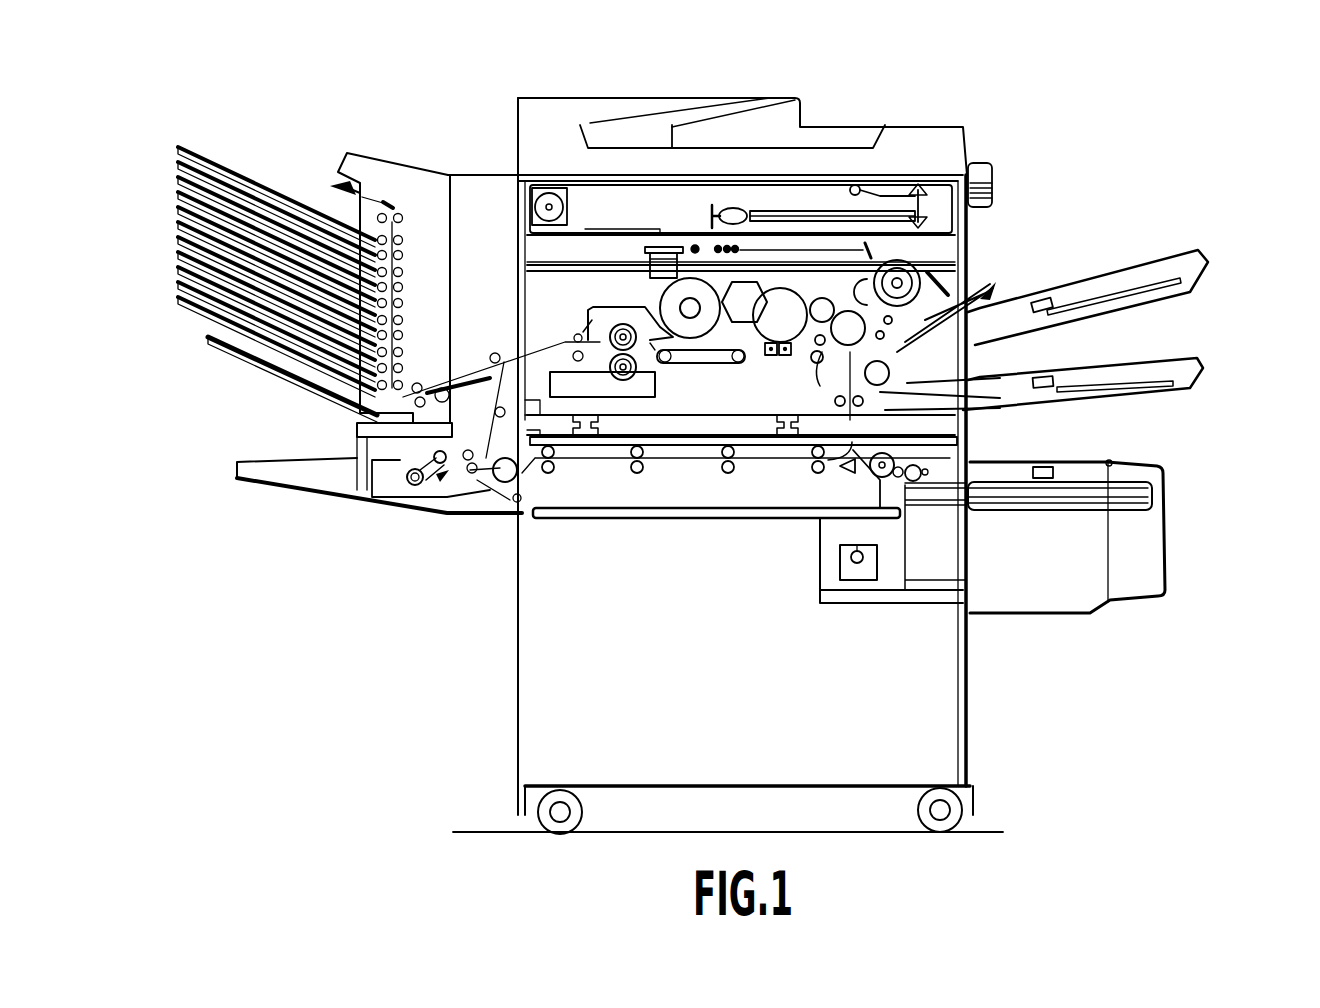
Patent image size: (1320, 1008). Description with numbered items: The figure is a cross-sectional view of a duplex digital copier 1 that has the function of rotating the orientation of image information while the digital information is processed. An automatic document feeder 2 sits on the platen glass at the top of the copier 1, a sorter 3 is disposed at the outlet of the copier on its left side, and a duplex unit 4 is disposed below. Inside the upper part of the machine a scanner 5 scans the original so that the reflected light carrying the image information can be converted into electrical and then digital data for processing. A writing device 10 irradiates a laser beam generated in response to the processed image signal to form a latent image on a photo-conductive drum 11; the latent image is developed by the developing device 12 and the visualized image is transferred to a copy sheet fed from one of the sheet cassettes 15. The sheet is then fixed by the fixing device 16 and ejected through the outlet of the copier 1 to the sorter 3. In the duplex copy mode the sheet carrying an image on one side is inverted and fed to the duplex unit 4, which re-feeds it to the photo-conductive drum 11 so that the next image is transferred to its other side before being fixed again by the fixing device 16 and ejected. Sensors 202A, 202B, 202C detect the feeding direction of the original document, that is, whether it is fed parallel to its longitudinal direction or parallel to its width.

The digital copier 1 is at (965, 267).
The automatic document feeder 2 is at (878, 125).
The sorter 3 is at (250, 163).
The duplex unit 4 is at (506, 532).
The scanner 5 is at (960, 219).
The writing device 10 is at (648, 258).
The photo-conductive drum 11 is at (781, 295).
The developing device 12 is at (856, 376).
The sheet cassettes 15 is at (1210, 260).
The fixing device 16 is at (575, 327).
The sensor 202A is at (1050, 298).
The sensor 202B is at (1050, 375).
The sensor 202C is at (1045, 464).